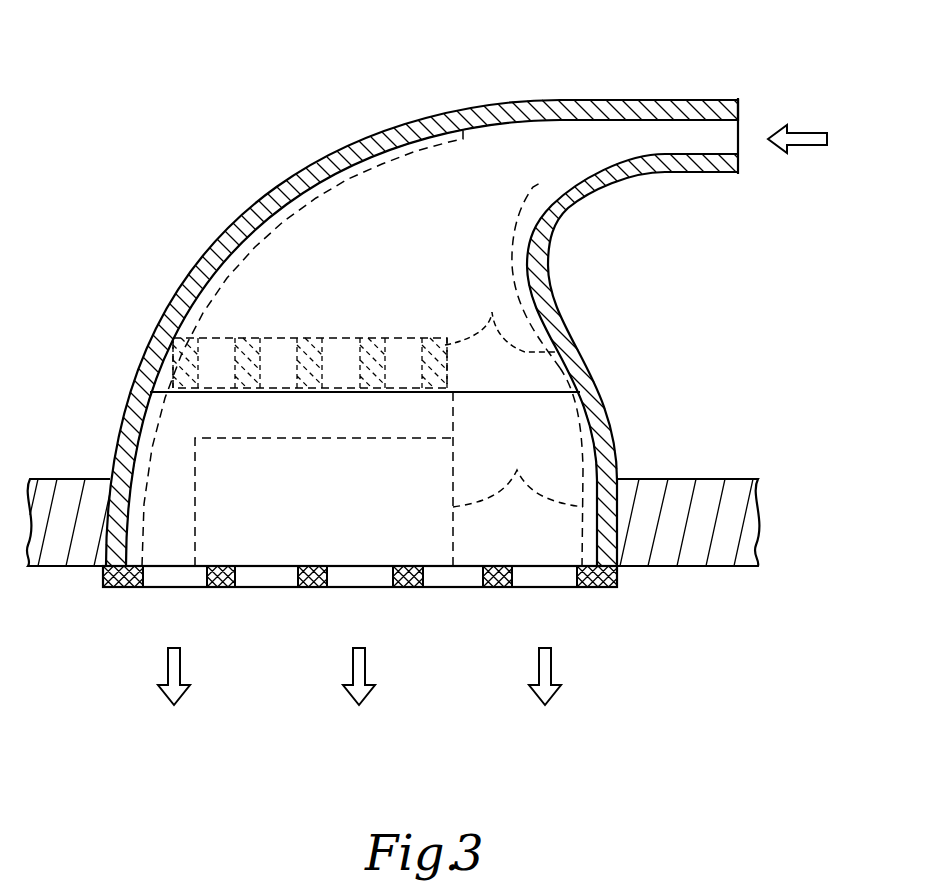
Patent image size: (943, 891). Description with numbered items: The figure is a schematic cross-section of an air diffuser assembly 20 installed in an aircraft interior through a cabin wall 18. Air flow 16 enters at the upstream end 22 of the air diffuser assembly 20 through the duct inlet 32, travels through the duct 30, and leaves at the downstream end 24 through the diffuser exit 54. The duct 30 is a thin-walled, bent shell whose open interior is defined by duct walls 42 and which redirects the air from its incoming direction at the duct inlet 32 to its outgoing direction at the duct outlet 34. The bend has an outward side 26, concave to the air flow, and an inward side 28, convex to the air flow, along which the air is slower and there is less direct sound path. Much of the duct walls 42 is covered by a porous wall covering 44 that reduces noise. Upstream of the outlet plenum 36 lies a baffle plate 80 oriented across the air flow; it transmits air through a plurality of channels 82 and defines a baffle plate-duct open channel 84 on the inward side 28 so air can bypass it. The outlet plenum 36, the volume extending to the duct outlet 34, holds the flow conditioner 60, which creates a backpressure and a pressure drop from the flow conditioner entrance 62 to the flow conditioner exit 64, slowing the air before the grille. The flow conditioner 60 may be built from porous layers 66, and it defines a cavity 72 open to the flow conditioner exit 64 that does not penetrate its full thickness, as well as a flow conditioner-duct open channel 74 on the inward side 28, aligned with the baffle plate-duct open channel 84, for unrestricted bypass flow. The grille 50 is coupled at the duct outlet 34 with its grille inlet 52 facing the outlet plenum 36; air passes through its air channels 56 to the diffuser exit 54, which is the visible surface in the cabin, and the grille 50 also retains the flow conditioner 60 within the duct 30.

The air flow 16 is at (806, 147).
The cabin wall 18 is at (683, 567).
The air diffuser assembly 20 is at (242, 72).
The upstream end 22 is at (688, 75).
The downstream end 24 is at (145, 627).
The outward side 26 is at (182, 273).
The inward side 28 is at (551, 290).
The duct 30 is at (224, 222).
The duct inlet 32 is at (740, 122).
The duct outlet 34 is at (607, 587).
The outlet plenum 36 is at (232, 467).
The duct walls 42 is at (286, 205).
The wall covering 44 is at (341, 184).
The grille 50 is at (498, 588).
The grille inlet 52 is at (470, 567).
The diffuser exit 54 is at (448, 588).
The air channels 56 is at (143, 573).
The flow conditioner 60 is at (537, 390).
The flow conditioner entrance 62 is at (517, 390).
The flow conditioner exit 64 is at (377, 569).
The layers 66 is at (580, 378).
The cavity 72 is at (197, 523).
The flow conditioner-duct open channel 74 is at (517, 469).
The baffle plate 80 is at (347, 338).
The channels 82 is at (257, 363).
The baffle plate-duct open channel 84 is at (490, 306).